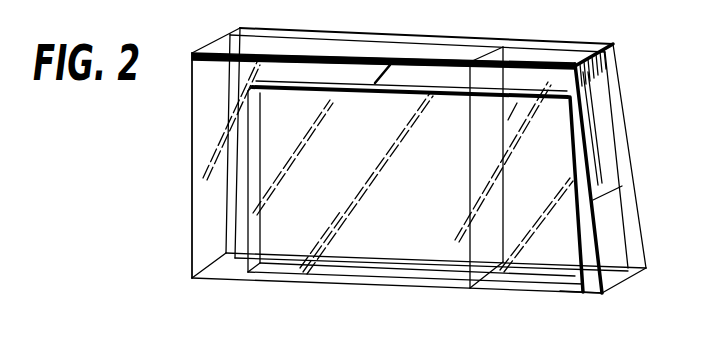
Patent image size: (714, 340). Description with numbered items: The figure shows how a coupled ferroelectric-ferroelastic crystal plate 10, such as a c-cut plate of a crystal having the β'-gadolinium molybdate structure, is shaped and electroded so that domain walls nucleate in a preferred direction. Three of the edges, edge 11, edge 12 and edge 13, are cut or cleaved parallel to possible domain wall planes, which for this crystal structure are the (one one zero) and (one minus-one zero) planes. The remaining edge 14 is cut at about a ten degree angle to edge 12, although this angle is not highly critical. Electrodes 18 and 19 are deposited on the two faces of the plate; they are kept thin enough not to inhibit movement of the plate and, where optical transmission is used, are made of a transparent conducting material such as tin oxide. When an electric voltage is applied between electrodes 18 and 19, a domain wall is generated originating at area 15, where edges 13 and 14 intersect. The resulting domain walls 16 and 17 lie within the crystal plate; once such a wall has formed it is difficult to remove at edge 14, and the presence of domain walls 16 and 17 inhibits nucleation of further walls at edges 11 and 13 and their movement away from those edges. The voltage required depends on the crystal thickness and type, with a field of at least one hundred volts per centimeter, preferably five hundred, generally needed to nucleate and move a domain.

The coupled ferroelectric-ferroelastic crystal plate 10 is at (340, 73).
The edge 11 is at (399, 43).
The edge 12 is at (208, 124).
The edge 13 is at (233, 267).
The edge 14 is at (612, 145).
The area 15 is at (598, 293).
The domain wall 16 is at (583, 242).
The domain wall 17 is at (476, 243).
The electrode 18 is at (575, 138).
The electrode 19 is at (617, 56).